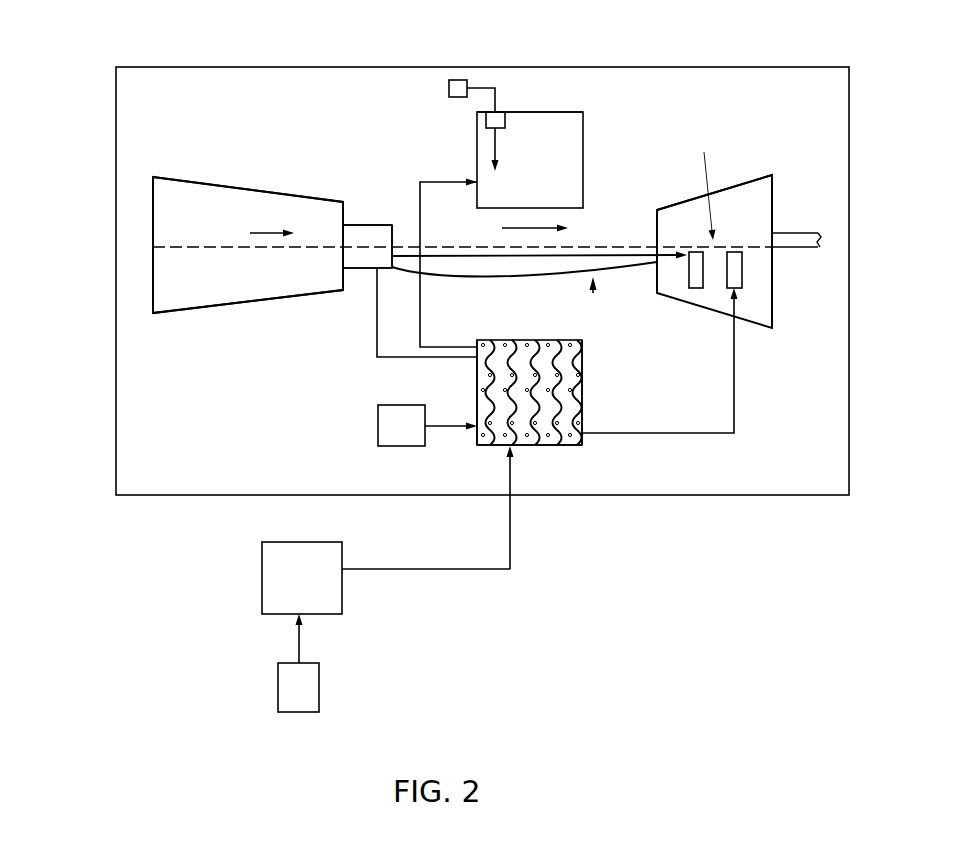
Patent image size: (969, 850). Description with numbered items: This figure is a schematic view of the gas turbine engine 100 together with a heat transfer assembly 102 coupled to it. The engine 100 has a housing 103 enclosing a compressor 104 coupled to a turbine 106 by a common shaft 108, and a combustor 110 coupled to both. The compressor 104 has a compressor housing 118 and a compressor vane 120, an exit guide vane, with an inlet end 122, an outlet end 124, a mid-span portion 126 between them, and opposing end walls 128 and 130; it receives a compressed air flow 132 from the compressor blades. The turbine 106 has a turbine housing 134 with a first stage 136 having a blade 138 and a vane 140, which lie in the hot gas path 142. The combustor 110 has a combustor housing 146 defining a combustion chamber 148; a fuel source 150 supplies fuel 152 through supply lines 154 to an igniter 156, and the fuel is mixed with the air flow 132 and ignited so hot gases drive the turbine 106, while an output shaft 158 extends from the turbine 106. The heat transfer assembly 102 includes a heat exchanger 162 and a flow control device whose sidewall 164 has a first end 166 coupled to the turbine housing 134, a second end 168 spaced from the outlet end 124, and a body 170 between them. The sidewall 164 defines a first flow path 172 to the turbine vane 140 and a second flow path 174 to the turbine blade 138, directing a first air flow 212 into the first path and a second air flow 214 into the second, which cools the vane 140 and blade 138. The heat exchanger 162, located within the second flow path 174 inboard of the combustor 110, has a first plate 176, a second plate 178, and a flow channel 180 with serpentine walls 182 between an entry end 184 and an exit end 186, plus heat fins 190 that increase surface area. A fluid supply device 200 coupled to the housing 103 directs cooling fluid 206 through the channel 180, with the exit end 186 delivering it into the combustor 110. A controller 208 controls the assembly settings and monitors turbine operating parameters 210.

The gas turbine engine 100 is at (157, 42).
The heat transfer assembly 102 is at (600, 512).
The housing 103 is at (116, 100).
The compressor 104 is at (153, 196).
The turbine 106 is at (769, 173).
The common shaft 108 is at (550, 278).
The combustor 110 is at (583, 150).
The compressor housing 118 is at (297, 200).
The compressor vane 120 is at (341, 262).
The inlet end 122 is at (352, 227).
The outlet end 124 is at (419, 181).
The mid-span portion 126 is at (358, 230).
The end wall 128 is at (372, 223).
The end wall 130 is at (363, 270).
The compressed air flow 132 is at (263, 227).
The turbine housing 134 is at (757, 186).
The first stage 136 is at (706, 181).
The blade 138 is at (740, 251).
The vane 140 is at (702, 250).
The hot gas path 142 is at (568, 227).
The combustor housing 146 is at (557, 113).
The combustion chamber 148 is at (547, 203).
The fuel source 150 is at (448, 88).
The fuel 152 is at (486, 133).
The supply lines 154 is at (483, 84).
The igniter 156 is at (505, 120).
The output shaft 158 is at (793, 249).
The heat exchanger 162 is at (583, 463).
The sidewall 164 is at (595, 296).
The first end 166 is at (657, 270).
The second end 168 is at (420, 290).
The body 170 is at (585, 277).
The first flow path 172 is at (667, 260).
The second flow path 174 is at (367, 357).
The first plate 176 is at (490, 447).
The second plate 178 is at (522, 462).
The flow channel 180 is at (533, 447).
The walls 182 is at (590, 443).
The entry end 184 is at (475, 439).
The exit end 186 is at (478, 339).
The heat fins 190 is at (583, 382).
The fluid supply device 200 is at (378, 432).
The cooling fluid 206 is at (423, 215).
The controller 208 is at (262, 578).
The turbine operating parameters 210 is at (311, 663).
The first air flow 212 is at (615, 293).
The second air flow 214 is at (734, 436).